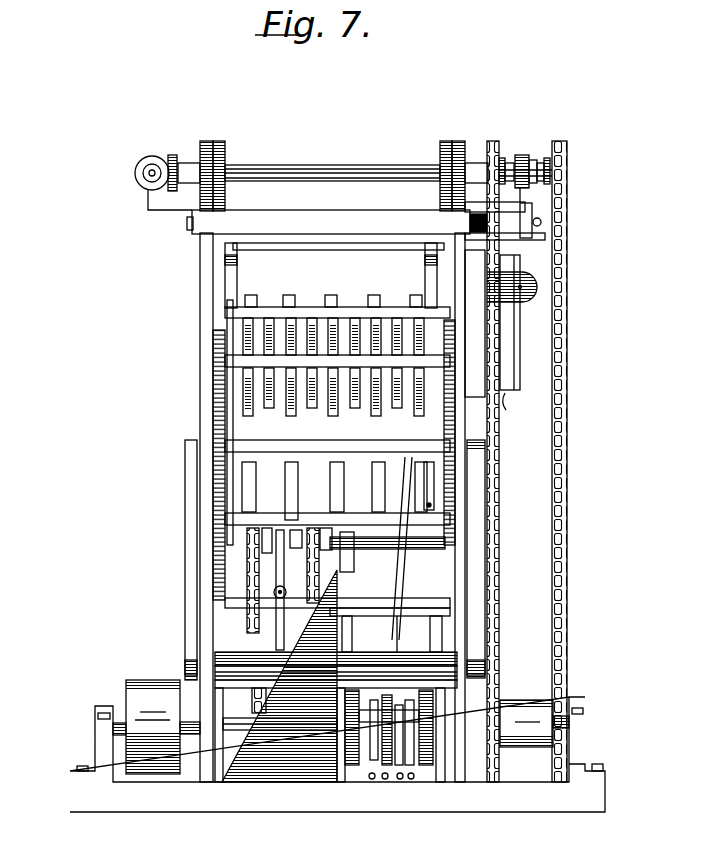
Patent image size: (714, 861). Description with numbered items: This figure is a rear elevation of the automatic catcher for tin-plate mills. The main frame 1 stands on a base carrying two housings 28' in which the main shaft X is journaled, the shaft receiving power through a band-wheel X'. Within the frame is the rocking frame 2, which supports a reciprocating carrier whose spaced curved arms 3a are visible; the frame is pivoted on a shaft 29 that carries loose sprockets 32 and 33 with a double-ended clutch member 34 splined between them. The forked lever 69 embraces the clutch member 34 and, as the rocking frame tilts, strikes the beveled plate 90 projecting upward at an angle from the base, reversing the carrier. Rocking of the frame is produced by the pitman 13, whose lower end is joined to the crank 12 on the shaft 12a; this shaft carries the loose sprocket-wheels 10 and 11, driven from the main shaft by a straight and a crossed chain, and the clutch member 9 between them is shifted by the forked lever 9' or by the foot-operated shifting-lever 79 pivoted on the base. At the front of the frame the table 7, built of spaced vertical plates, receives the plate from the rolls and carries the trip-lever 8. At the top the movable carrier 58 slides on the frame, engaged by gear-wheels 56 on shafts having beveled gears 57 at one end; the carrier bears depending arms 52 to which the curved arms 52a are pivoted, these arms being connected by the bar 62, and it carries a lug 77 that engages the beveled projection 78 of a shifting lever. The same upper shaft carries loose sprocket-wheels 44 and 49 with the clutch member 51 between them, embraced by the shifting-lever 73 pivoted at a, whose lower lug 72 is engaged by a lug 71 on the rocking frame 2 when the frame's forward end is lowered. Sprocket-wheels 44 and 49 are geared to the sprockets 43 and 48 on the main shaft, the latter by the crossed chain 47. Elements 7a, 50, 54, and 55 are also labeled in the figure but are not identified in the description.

The main frame 1 is at (200, 313).
The rocking frame 2 is at (440, 674).
The curved arms 3a is at (310, 404).
The table 7 is at (292, 462).
The post 7a is at (290, 461).
The trip-lever 8 is at (357, 510).
The clutch member 9 is at (392, 725).
The shifting-lever 9' is at (337, 625).
The sprocket-wheel 10 is at (433, 757).
The sprocket-wheel 11 is at (345, 757).
The crank 12 is at (182, 688).
The shaft 12a is at (347, 710).
The pitman 13 is at (185, 563).
The housings 28' is at (340, 754).
The shaft 29 is at (365, 549).
The sprocket 32 is at (222, 540).
The sprocket-wheel 33 is at (305, 556).
The clutch member 34 is at (296, 518).
The sprocket 43 is at (568, 682).
The sprocket-wheel 44 is at (567, 165).
The crossed chain 47 is at (568, 440).
The sprocket 48 is at (499, 688).
The sprocket-wheel 49 is at (492, 140).
The chain 50 is at (500, 474).
The clutch member 51 is at (521, 155).
The depending arms 52 is at (242, 272).
The curved arms 52a is at (329, 302).
The pulley 54 is at (135, 177).
The pulley axle 55 is at (153, 165).
The gear-wheels 56 is at (226, 146).
The beveled gears 57 is at (176, 158).
The movable carrier 58 is at (222, 210).
The bar 62 is at (212, 286).
The lever 69 is at (276, 632).
The lug 71 is at (472, 398).
The lug 72 is at (506, 396).
The shifting-lever 73 is at (520, 293).
The pivot a is at (522, 288).
The lug 77 is at (468, 222).
The beveled projection 78 is at (545, 234).
The shifting-lever 79 is at (386, 772).
The beveled plate 90 is at (279, 676).
The main shaft X is at (100, 701).
The band-wheel X' is at (122, 671).